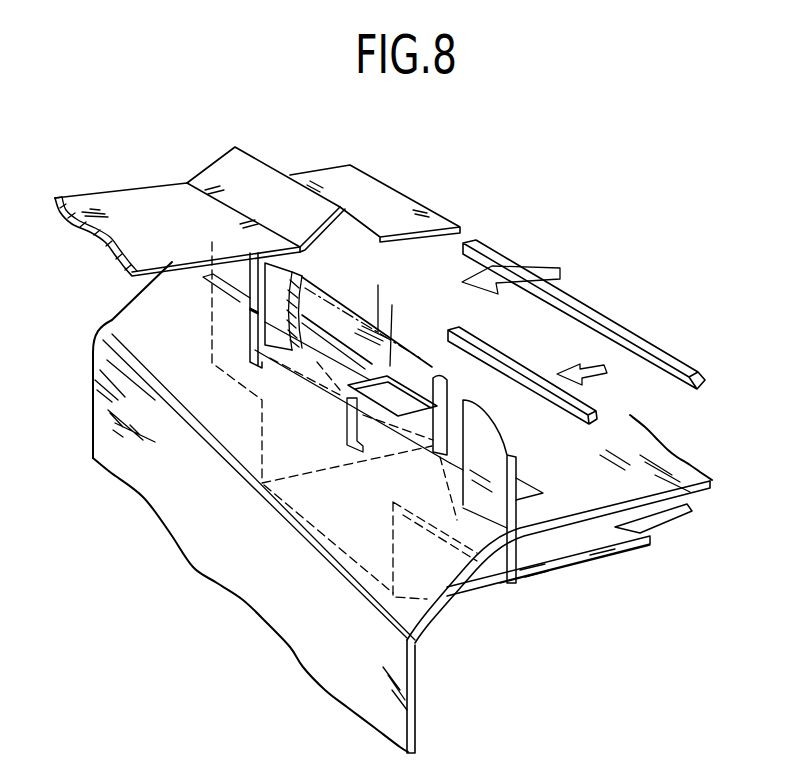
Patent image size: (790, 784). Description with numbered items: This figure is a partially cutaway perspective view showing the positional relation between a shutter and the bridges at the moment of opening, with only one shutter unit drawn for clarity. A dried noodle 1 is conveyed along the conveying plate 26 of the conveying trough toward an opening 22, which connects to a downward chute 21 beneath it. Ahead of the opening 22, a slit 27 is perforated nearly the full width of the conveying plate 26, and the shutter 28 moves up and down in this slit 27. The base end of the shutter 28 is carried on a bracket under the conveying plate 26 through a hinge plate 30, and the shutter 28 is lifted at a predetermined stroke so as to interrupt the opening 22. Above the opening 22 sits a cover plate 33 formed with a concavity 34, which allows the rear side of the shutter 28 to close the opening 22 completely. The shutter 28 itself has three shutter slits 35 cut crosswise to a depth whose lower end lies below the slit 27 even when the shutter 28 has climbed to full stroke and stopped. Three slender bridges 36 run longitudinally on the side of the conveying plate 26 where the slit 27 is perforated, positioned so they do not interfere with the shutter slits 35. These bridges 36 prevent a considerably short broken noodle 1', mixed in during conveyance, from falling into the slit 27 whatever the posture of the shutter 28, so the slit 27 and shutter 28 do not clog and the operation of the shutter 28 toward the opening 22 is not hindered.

The dried noodle 1 is at (583, 314).
The short broken noodle 1' is at (527, 366).
The downward chute 21 is at (415, 697).
The opening 22 is at (430, 268).
The conveying plate 26 is at (563, 510).
The slit 27 is at (520, 497).
The shutter 28 is at (480, 470).
The hinge plate 30 is at (667, 515).
The cover plate 33 is at (152, 207).
The concavity 34 is at (268, 176).
The shutter slit 35 is at (258, 281).
The bridge 36 is at (258, 308).